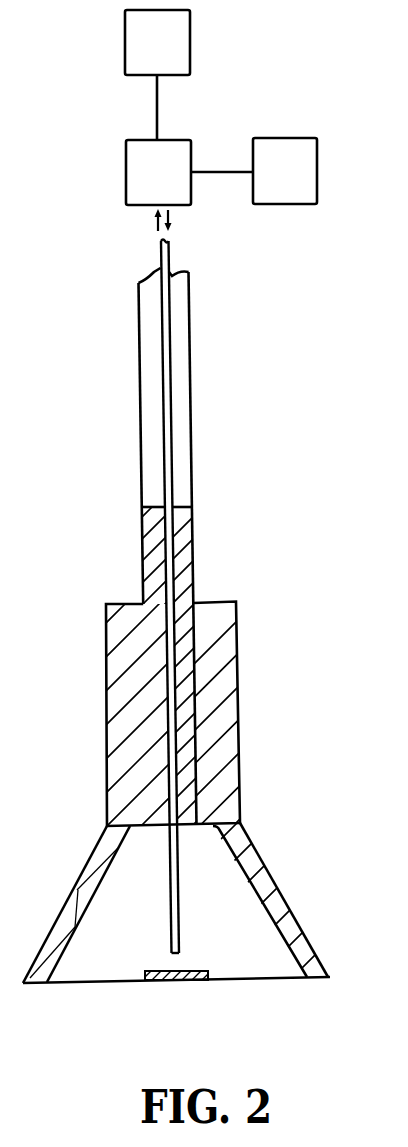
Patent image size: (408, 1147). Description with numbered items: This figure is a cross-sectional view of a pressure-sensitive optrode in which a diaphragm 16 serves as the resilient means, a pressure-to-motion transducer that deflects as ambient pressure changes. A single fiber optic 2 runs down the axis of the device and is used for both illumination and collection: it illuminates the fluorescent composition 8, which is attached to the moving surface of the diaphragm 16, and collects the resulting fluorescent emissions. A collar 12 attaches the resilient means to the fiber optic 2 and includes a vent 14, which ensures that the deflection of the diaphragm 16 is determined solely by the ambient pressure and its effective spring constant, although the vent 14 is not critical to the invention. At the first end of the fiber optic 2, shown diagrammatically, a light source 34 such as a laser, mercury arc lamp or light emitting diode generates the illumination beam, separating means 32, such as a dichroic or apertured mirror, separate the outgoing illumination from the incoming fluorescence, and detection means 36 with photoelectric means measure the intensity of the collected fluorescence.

The fiber optic 2 is at (157, 262).
The fluorescent composition 8 is at (187, 977).
The collar 12 is at (238, 686).
The vent 14 is at (197, 600).
The diaphragm 16 is at (288, 978).
The means for separating the outgoing illumination beam from the incoming fluorescen 32 is at (171, 187).
The light source 34 is at (170, 55).
The detection means 36 is at (300, 185).